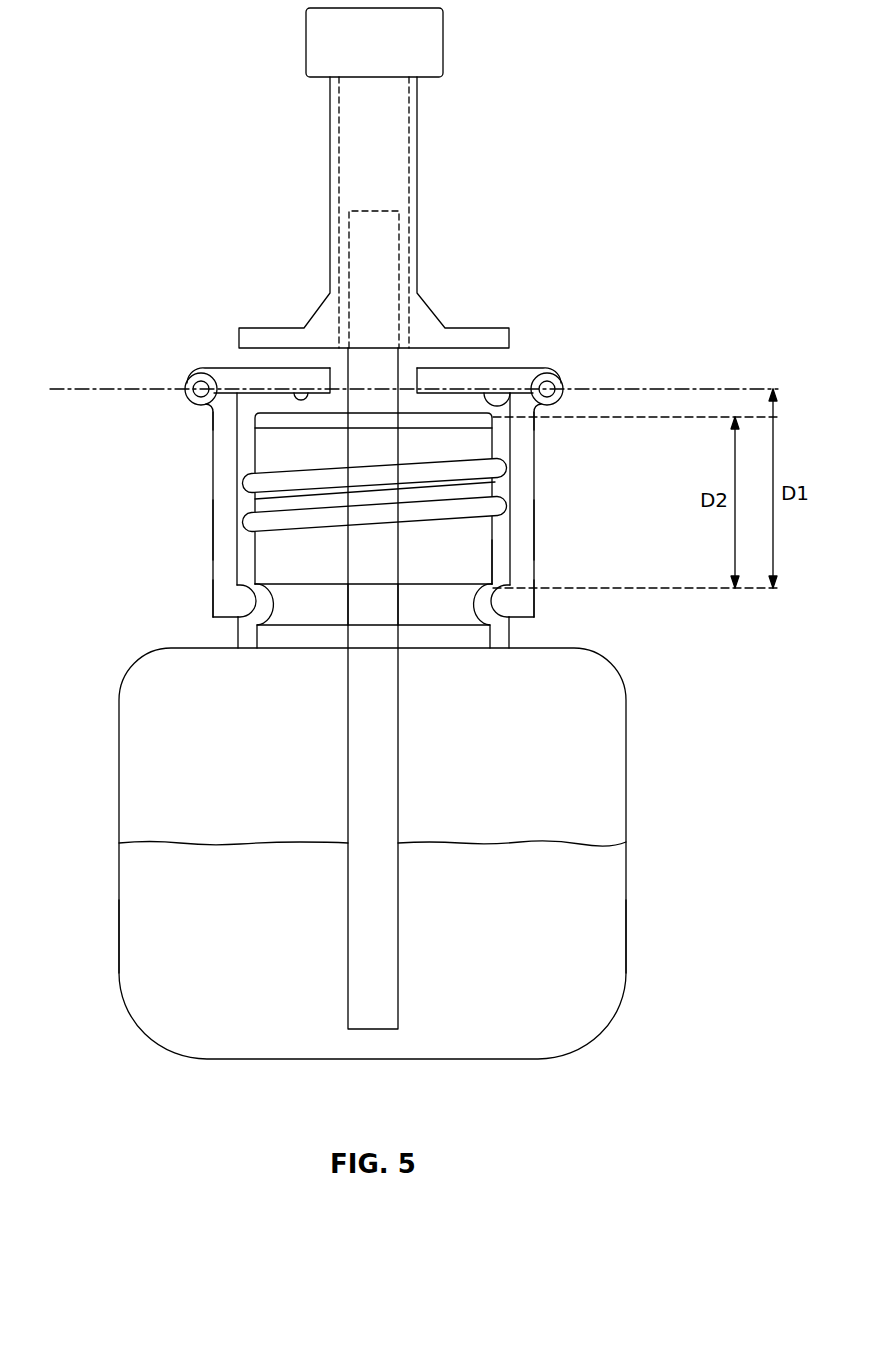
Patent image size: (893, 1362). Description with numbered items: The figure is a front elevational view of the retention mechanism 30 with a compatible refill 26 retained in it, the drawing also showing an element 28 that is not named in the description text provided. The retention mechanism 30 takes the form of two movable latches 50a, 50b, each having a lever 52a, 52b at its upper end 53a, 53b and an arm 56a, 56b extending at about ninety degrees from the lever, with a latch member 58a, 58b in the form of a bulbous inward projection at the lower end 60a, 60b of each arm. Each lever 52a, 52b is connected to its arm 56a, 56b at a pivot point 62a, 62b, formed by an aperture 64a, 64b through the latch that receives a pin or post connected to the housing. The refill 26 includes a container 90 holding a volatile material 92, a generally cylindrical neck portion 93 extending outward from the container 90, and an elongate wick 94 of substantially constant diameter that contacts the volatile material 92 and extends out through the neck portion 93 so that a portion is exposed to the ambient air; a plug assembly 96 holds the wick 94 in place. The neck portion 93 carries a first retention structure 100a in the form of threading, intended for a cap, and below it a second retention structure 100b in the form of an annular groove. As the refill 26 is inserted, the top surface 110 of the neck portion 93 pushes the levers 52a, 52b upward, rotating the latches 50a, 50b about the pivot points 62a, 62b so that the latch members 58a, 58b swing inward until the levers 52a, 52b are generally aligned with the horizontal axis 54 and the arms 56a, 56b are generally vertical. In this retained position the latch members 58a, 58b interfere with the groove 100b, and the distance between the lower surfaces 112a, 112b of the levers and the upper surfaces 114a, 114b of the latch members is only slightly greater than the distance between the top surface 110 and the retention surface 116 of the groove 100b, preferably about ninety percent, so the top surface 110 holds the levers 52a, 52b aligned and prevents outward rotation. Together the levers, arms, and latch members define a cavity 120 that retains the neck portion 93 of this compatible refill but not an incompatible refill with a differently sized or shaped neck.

The compatible refill 26 is at (675, 811).
The actuator shaft 28 is at (398, 147).
The retention mechanism 30 is at (626, 323).
The movable latch 50a is at (198, 475).
The movable latch 50b is at (570, 484).
The lever 52a is at (268, 368).
The lever 52b is at (494, 368).
The upper end 53a is at (222, 410).
The upper end 53b is at (518, 404).
The horizontal axis 54 is at (663, 389).
The arm 56a is at (213, 538).
The arm 56b is at (534, 514).
The latch member 58a is at (243, 616).
The latch member 58b is at (504, 617).
The lower end 60a is at (222, 572).
The lower end 60b is at (525, 573).
The pivot point 62a is at (194, 373).
The pivot point 62b is at (556, 375).
The aperture 64a is at (198, 396).
The aperture 64b is at (551, 396).
The container 90 is at (612, 977).
The volatile material 92 is at (132, 977).
The neck portion 93 is at (494, 535).
The wick 94 is at (382, 1018).
The plug assembly 96 is at (430, 420).
The retention structure 100a is at (502, 470).
The retention structure 100b is at (477, 608).
The top surface 110 is at (408, 413).
The lower surface 112a is at (300, 385).
The lower surface 112b is at (512, 406).
The upper surface 114a is at (247, 607).
The upper surface 114b is at (504, 613).
The retention surface 116 is at (264, 611).
The cavity 120 is at (238, 503).